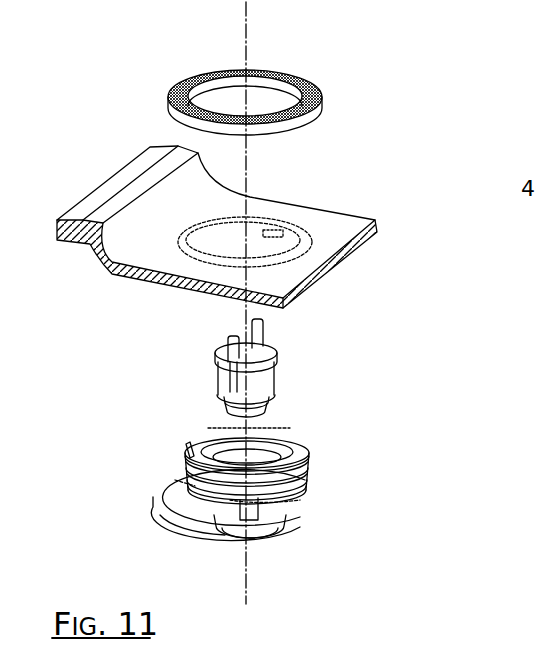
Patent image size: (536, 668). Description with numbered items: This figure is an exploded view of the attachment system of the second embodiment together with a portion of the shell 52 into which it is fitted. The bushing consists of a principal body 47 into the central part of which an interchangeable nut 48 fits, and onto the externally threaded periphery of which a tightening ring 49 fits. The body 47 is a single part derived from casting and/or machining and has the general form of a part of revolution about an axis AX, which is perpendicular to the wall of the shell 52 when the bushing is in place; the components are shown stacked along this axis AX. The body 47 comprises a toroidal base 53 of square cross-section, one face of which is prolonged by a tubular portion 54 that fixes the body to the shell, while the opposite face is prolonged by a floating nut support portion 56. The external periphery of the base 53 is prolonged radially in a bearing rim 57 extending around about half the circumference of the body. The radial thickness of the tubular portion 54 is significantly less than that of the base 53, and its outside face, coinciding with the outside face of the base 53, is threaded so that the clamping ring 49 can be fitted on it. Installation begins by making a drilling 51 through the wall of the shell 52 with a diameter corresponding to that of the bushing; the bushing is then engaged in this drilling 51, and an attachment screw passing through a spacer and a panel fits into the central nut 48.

The axis AX is at (247, 31).
The principal body 47 is at (330, 490).
The interchangeable nut 48 is at (278, 372).
The tightening ring 49 is at (318, 112).
The drilling 51 is at (302, 233).
The shell 52 is at (292, 278).
The toroidal base 53 is at (270, 460).
The tubular portion 54 is at (303, 459).
The floating nut support portion 56 is at (278, 524).
The bearing rim 57 is at (165, 484).